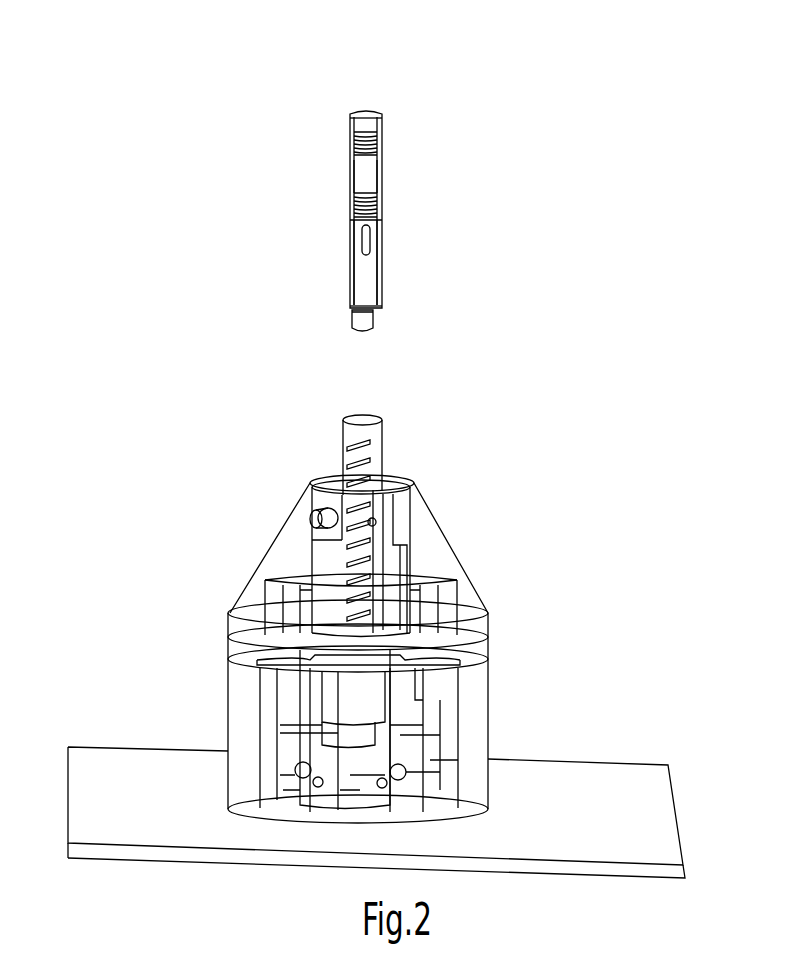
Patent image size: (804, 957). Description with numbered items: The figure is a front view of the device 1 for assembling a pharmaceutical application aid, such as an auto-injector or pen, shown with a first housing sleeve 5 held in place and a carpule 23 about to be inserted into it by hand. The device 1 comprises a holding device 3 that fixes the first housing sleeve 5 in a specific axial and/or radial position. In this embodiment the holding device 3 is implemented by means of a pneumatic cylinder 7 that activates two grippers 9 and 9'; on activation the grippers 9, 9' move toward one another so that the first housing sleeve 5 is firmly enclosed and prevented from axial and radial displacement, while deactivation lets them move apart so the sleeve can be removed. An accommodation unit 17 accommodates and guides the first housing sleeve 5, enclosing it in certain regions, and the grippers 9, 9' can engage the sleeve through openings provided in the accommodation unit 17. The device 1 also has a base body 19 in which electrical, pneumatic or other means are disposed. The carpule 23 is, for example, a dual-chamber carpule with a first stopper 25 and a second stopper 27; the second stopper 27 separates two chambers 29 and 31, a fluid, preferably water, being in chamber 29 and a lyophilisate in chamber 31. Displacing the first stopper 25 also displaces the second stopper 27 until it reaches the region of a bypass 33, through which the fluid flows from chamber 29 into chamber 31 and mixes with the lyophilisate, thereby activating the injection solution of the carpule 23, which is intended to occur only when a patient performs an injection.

The device 1 is at (486, 496).
The holding device 3 is at (427, 604).
The first housing sleeve 5 is at (376, 413).
The pneumatic cylinder 7 is at (250, 721).
The gripper 9 is at (287, 577).
The gripper 9' is at (449, 558).
The accommodation unit 17 is at (330, 505).
The base body 19 is at (592, 760).
The carpule 23 is at (388, 176).
The first stopper 25 is at (381, 135).
The second stopper 27 is at (380, 205).
The chamber 29 is at (370, 178).
The chamber 31 is at (363, 278).
The bypass 33 is at (370, 243).